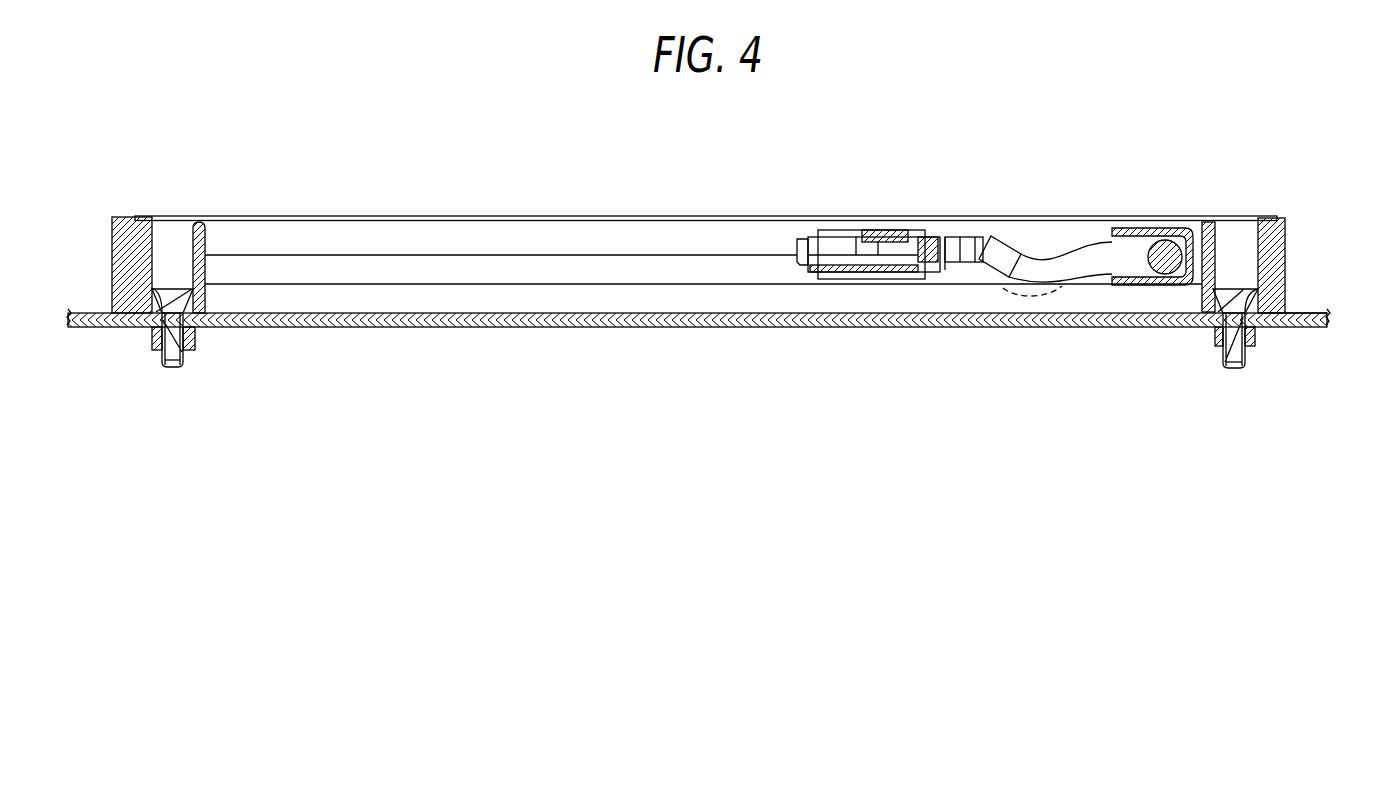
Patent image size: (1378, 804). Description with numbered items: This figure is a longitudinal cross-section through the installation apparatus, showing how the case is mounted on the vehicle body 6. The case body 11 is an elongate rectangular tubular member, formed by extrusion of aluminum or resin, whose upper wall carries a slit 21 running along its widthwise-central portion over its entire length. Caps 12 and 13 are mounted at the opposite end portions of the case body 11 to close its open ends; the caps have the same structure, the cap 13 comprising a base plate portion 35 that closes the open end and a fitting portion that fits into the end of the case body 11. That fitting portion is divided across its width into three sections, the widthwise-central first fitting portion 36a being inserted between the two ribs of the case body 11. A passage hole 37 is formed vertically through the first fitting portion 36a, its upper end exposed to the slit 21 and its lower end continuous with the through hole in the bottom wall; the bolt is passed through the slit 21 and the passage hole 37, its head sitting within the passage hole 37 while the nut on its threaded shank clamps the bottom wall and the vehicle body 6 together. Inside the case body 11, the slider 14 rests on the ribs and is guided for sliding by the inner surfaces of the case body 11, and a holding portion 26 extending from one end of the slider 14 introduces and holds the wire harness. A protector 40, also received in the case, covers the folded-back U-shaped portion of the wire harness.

The vehicle body 6 is at (1037, 328).
The case body 11 is at (498, 338).
The cap 12 is at (104, 240).
The cap 13 is at (1294, 236).
The slider 14 is at (792, 228).
The slit 21 is at (552, 215).
The holding portion 26 is at (1000, 240).
The base plate portion 35 is at (1282, 316).
The first fitting portion 36a is at (1208, 235).
The passage hole 37 is at (1257, 252).
The protector 40 is at (1146, 215).